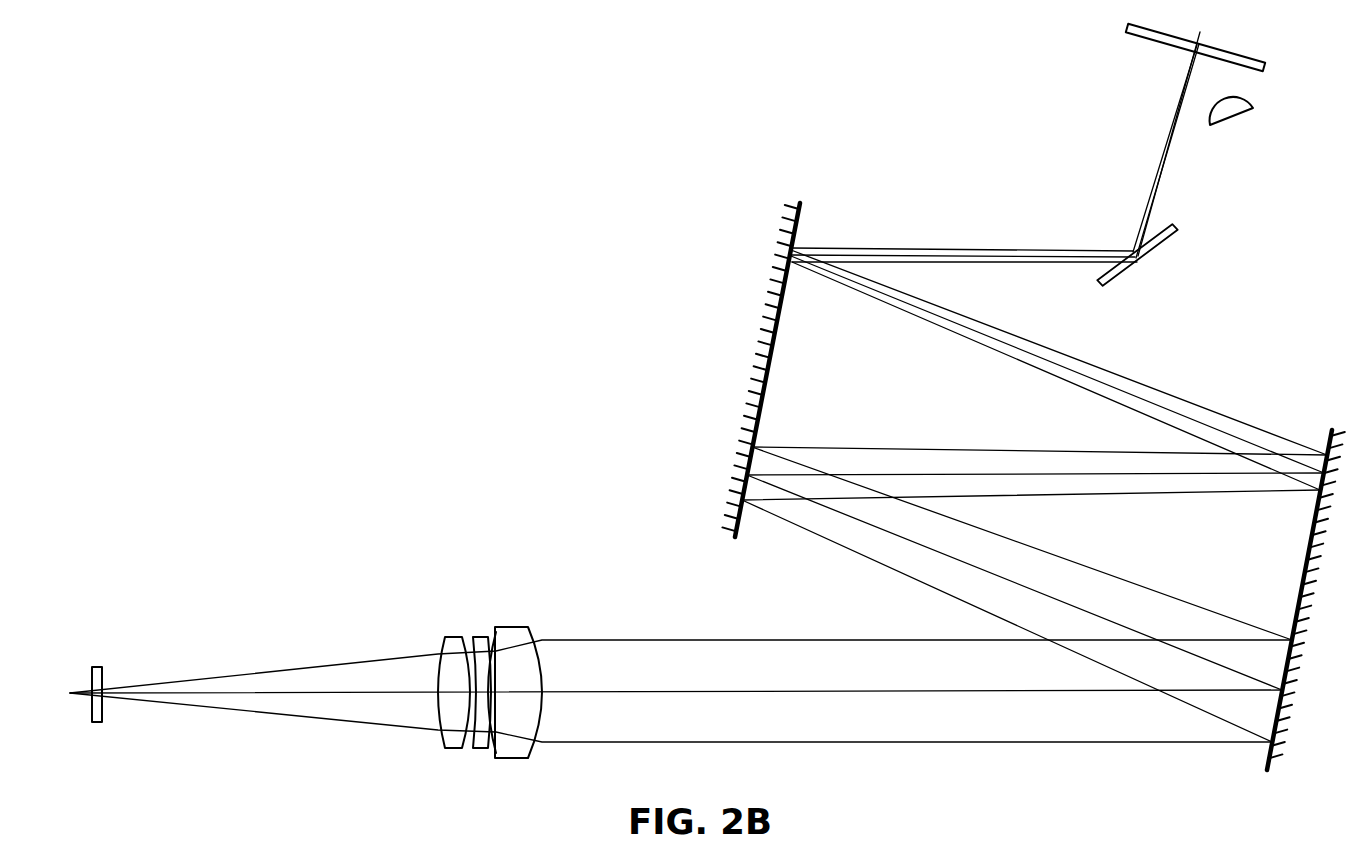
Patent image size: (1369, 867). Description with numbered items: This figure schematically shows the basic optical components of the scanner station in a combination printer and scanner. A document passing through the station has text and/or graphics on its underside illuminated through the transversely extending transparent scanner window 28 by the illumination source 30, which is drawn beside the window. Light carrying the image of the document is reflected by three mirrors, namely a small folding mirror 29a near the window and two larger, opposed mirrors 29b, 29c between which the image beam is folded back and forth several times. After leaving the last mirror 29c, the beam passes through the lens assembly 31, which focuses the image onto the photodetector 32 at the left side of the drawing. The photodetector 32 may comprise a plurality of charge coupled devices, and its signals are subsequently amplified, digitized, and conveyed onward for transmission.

The scanner window 28 is at (1140, 38).
The illumination source 30 is at (1230, 125).
The mirror 29a is at (1167, 243).
The mirror 29b is at (767, 368).
The mirror 29c is at (1307, 553).
The lens assembly 31 is at (507, 600).
The photodetector 32 is at (95, 665).